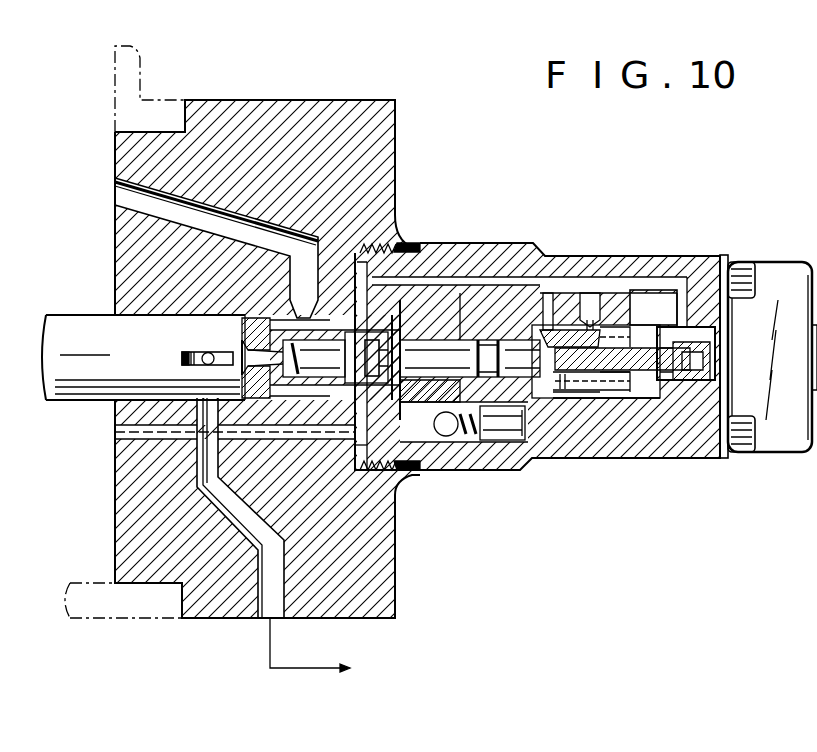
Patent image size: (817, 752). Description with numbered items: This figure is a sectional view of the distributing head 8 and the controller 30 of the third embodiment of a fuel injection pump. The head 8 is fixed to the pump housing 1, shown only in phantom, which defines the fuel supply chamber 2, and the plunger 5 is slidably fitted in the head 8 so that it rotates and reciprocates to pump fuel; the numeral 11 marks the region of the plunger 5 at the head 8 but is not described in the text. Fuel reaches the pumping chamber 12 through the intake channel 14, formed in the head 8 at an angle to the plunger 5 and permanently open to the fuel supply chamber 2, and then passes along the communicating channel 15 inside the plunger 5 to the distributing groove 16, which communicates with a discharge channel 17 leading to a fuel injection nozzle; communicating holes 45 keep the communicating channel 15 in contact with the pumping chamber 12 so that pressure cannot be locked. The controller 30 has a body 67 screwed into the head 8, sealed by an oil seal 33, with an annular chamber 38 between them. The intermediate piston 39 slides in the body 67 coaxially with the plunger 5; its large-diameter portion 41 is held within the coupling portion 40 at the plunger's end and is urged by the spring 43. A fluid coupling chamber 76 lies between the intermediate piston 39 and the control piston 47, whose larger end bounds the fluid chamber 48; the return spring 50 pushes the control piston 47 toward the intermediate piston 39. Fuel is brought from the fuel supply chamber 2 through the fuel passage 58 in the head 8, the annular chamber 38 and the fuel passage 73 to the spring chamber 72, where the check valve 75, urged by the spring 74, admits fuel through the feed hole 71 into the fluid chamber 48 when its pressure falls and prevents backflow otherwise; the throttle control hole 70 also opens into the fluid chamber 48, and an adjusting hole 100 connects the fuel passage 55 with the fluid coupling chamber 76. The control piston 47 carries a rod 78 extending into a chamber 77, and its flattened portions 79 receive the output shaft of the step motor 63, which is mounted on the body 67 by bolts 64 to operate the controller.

The pump housing 1 is at (145, 62).
The fuel supply chamber 2 is at (101, 551).
The plunger 5 is at (66, 400).
The distributing head 8 is at (334, 108).
The shaft bore 11 is at (110, 315).
The pumping chamber 12 is at (412, 390).
The intake channel 14 is at (245, 218).
The communicating channel 15 is at (242, 376).
The distributing groove 16 is at (182, 359).
The discharge channel 17 is at (258, 583).
The controller 30 is at (624, 246).
The oil seal 33 is at (414, 243).
The annular chamber 38 is at (355, 452).
The intermediate piston 39 is at (436, 340).
The coupling portion 40 is at (398, 330).
The large-diameter portion 41 is at (384, 384).
The spring 43 is at (296, 386).
The communicating hole 45 is at (256, 318).
The control piston 47 is at (547, 293).
The fluid chamber 48 is at (602, 370).
The return spring 50 is at (558, 390).
The fuel passage 55 is at (672, 277).
The fuel passage 58 is at (142, 440).
The step motor 63 is at (790, 266).
The bolt 64 is at (741, 262).
The body 67 is at (510, 256).
The throttle control hole 70 is at (590, 293).
The feed hole 71 is at (658, 400).
The spring chamber 72 is at (508, 442).
The fuel passage 73 is at (420, 426).
The spring 74 is at (470, 436).
The check valve 75 is at (446, 436).
The fluid coupling chamber 76 is at (490, 340).
The chamber 77 is at (700, 380).
The rod 78 is at (662, 382).
The flattened portions 79 is at (652, 340).
The adjusting hole 100 is at (460, 293).